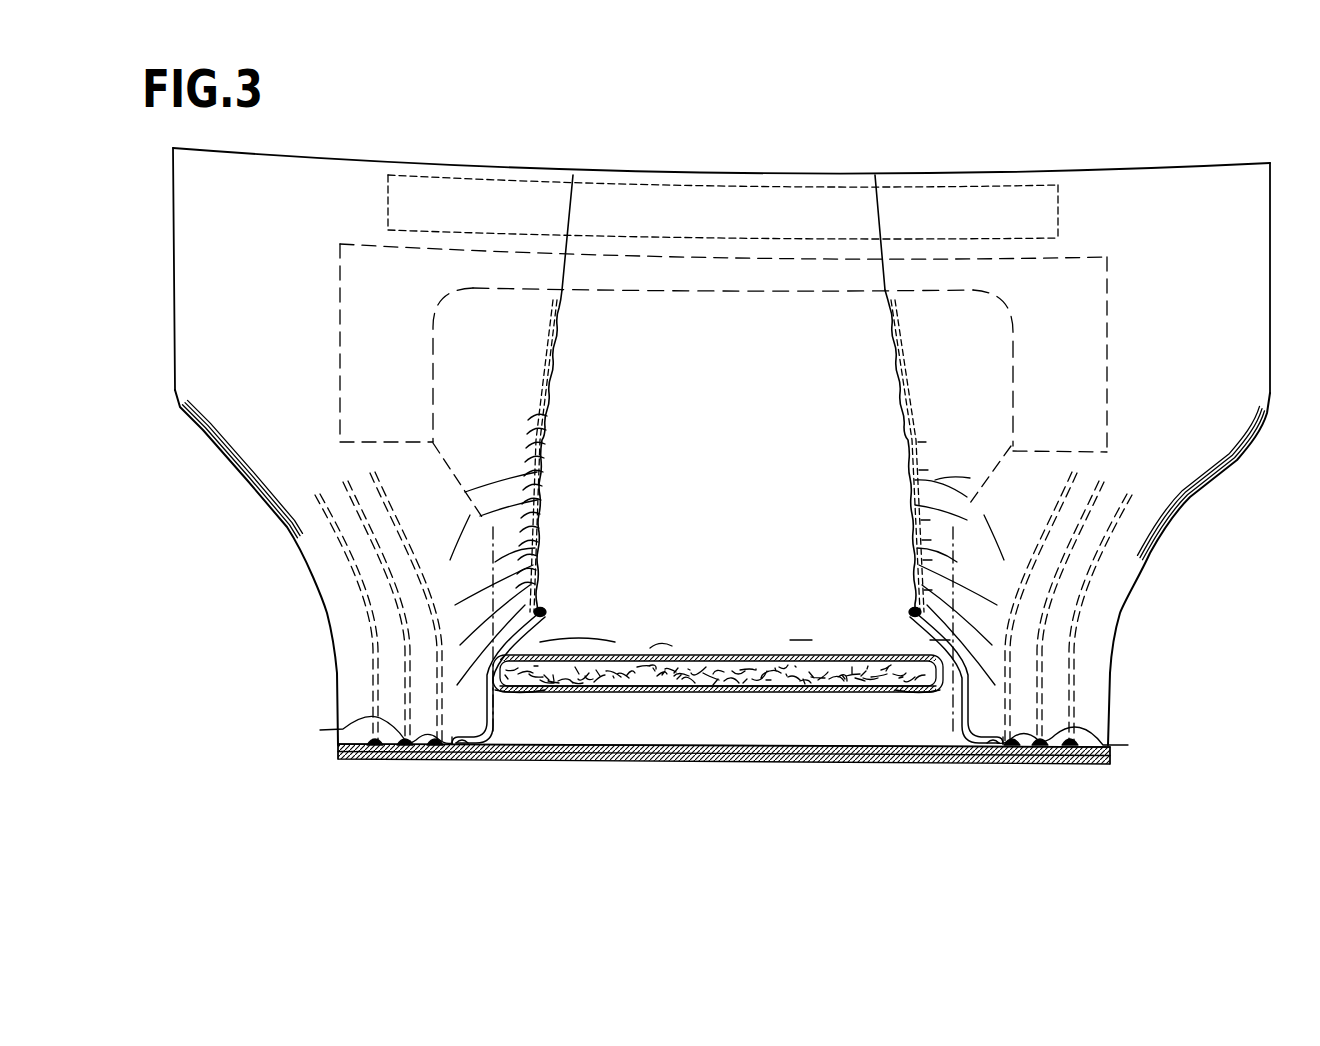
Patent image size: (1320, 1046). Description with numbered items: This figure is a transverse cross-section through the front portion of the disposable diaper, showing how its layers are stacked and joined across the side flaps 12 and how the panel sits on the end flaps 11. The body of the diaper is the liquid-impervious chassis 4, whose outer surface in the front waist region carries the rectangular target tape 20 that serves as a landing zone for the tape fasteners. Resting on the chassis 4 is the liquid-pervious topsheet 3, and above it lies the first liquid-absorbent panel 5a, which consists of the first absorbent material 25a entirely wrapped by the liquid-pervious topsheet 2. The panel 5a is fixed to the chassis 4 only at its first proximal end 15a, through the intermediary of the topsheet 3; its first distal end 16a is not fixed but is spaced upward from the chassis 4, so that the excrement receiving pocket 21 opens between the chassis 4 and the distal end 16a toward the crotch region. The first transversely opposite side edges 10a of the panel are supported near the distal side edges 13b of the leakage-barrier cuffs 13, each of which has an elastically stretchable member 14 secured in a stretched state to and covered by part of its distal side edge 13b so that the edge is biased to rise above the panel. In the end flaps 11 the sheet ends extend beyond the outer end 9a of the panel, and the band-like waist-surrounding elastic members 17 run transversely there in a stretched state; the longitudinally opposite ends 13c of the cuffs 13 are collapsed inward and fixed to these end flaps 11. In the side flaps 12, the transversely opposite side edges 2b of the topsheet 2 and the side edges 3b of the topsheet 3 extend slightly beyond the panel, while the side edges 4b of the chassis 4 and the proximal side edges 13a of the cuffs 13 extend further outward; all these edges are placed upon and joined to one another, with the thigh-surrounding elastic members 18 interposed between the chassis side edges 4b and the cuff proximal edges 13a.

The liquid-pervious topsheet 2 is at (696, 660).
The transversely opposite side edges of the topsheet 2b is at (467, 740).
The liquid-pervious topsheet 3 is at (740, 748).
The transversely opposite side edges of the topsheet 3b is at (466, 748).
The liquid-impervious chassis 4 is at (640, 764).
The transversely opposite side edges of the chassis 4b is at (352, 757).
The first liquid-absorbent panel 5a is at (840, 667).
The outer end of the first absorbent panel 9a is at (683, 290).
The first transversely opposite side edges 10a is at (510, 686).
The end flaps 11 is at (733, 243).
The side flaps 12 is at (417, 515).
The leakage-barrier cuffs 13 is at (539, 500).
The proximal side edge 13a is at (723, 737).
The distal side edge 13b is at (530, 550).
The longitudinally opposite ends 13c is at (518, 240).
The elastically stretchable member 14 is at (544, 612).
The first proximal end 15a is at (762, 303).
The first distal end 16a is at (790, 627).
The waist-surrounding elastic members 17 is at (624, 198).
The thigh-surrounding elastic members 18 is at (435, 748).
The target tape 20 is at (355, 270).
The excrement receiving pocket 21 is at (747, 715).
The first absorbent material 25a is at (646, 662).